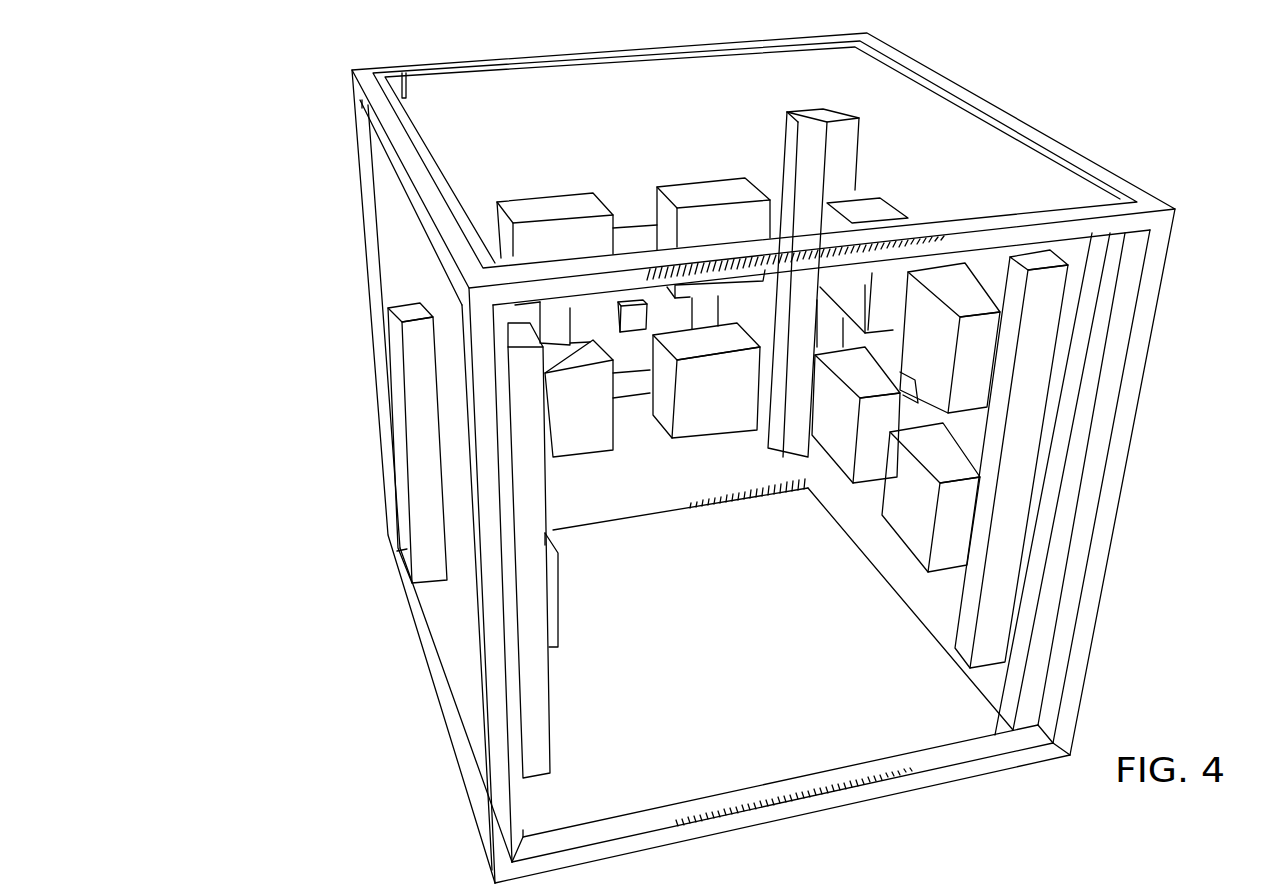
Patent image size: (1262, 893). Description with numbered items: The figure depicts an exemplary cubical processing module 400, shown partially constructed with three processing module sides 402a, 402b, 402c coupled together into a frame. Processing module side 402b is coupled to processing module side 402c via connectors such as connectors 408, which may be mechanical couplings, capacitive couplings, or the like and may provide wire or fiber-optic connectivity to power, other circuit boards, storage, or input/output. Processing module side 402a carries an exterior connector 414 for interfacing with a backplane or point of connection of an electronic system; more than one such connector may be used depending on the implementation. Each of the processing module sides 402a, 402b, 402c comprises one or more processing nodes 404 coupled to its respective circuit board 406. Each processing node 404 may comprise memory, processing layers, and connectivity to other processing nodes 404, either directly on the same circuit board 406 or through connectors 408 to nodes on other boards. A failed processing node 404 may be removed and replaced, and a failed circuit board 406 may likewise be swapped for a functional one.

The processing module 400 is at (673, 458).
The processing module side 402a is at (437, 694).
The processing module side 402b is at (604, 164).
The processing module side 402c is at (1085, 404).
The processing node 404 is at (915, 522).
The circuit board 406 is at (993, 78).
The connector 408 is at (815, 138).
The exterior connector 414 is at (393, 330).